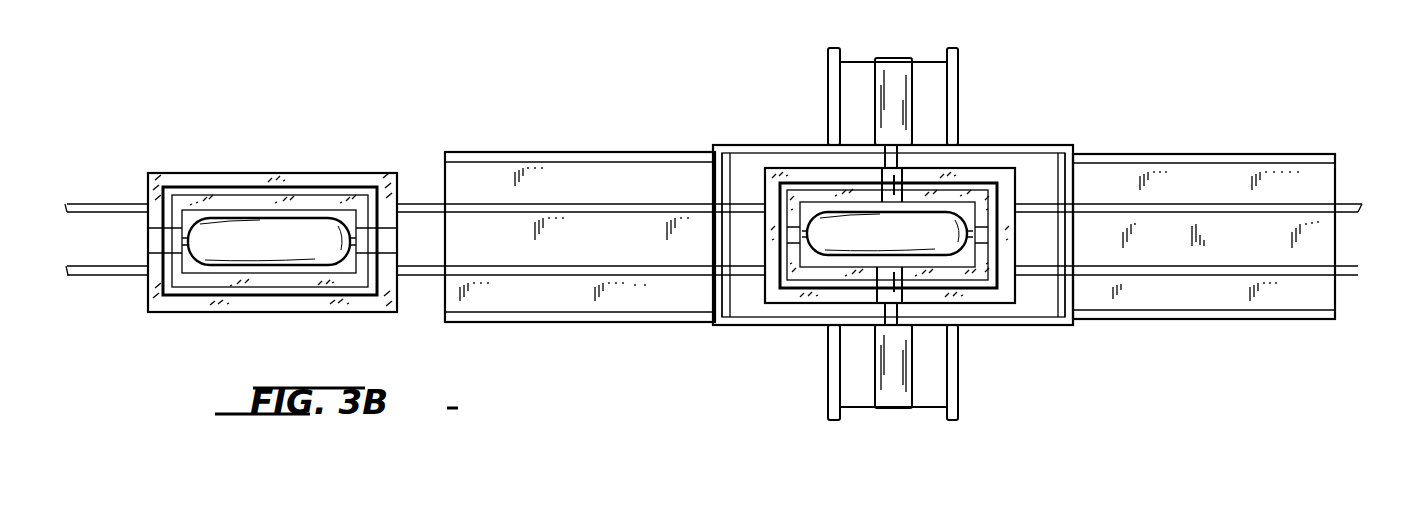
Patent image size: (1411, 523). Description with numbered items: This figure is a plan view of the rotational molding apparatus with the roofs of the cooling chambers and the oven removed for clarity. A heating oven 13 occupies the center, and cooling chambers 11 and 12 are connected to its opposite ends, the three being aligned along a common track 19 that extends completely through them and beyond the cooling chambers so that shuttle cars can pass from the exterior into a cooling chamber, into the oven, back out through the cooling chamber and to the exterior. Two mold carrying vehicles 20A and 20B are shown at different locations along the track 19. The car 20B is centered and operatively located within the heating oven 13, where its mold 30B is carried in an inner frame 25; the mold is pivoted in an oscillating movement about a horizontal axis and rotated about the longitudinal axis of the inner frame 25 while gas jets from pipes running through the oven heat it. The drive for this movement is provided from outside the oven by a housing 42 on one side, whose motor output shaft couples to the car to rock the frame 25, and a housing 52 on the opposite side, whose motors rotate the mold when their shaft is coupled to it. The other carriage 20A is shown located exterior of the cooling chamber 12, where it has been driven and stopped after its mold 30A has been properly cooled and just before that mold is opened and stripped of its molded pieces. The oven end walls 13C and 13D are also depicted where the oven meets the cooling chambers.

The cooling chamber 11 is at (1183, 154).
The cooling chamber 12 is at (568, 152).
The heating oven 13 is at (913, 232).
The housing end wall 13C is at (1062, 178).
The housing end wall 13D is at (715, 322).
The track 19 is at (1359, 203).
The mold carrying vehicle 20A is at (272, 217).
The mold carrying vehicle 20B is at (872, 228).
The inner frame 25 is at (963, 273).
The mold 30A is at (298, 250).
The mold 30B is at (917, 241).
The housing 42 is at (898, 58).
The housing 52 is at (892, 402).